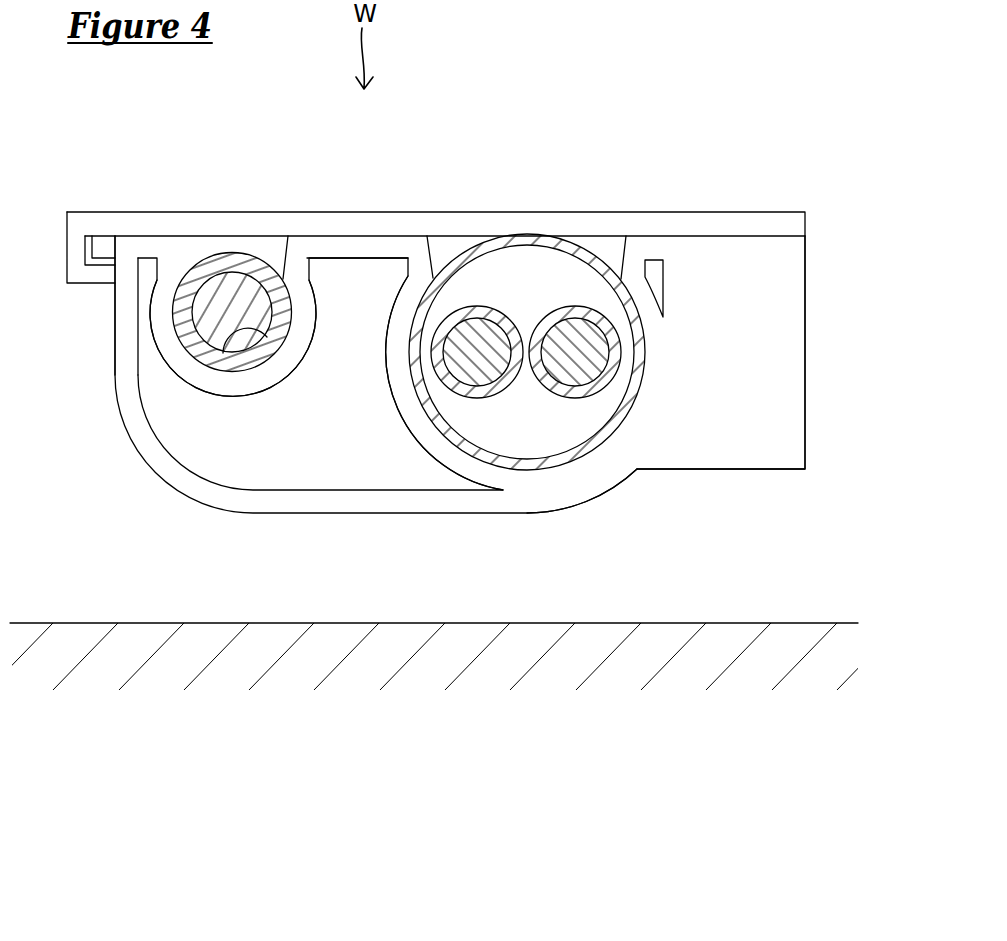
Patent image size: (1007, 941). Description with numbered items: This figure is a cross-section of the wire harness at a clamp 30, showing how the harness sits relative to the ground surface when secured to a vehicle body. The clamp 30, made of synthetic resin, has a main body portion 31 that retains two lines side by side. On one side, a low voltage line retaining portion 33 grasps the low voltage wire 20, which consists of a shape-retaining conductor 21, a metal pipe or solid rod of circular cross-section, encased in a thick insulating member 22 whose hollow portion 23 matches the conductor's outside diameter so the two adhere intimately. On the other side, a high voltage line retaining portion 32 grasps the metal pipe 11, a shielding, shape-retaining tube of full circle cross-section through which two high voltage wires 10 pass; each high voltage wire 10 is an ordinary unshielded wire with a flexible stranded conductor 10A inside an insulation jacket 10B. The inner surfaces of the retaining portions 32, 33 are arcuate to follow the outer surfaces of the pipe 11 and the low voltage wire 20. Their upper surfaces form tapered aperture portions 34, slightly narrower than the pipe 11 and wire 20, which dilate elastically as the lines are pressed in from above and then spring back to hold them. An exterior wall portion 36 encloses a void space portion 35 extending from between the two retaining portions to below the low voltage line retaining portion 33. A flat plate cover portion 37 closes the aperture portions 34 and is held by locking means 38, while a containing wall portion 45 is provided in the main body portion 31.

The high voltage wires 10 is at (581, 503).
The flexible conductor 10A is at (590, 370).
The insulation jacket 10B is at (617, 363).
The pipe 11 is at (583, 450).
The low voltage wire 20 is at (165, 408).
The shape-retaining conductor 21 is at (220, 328).
The insulating member 22 is at (208, 353).
The hollow portion 23 is at (222, 349).
The clamp 30 is at (717, 218).
The main body portion 31 is at (369, 247).
The high voltage line retaining portion 32 is at (415, 417).
The low voltage line retaining portion 33 is at (252, 378).
The aperture portions 34 is at (283, 253).
The void space portion 35 is at (322, 415).
The exterior wall portion 36 is at (122, 323).
The cover portion 37 is at (508, 221).
The locking means 38 is at (104, 217).
The containing wall portion 45 is at (745, 348).